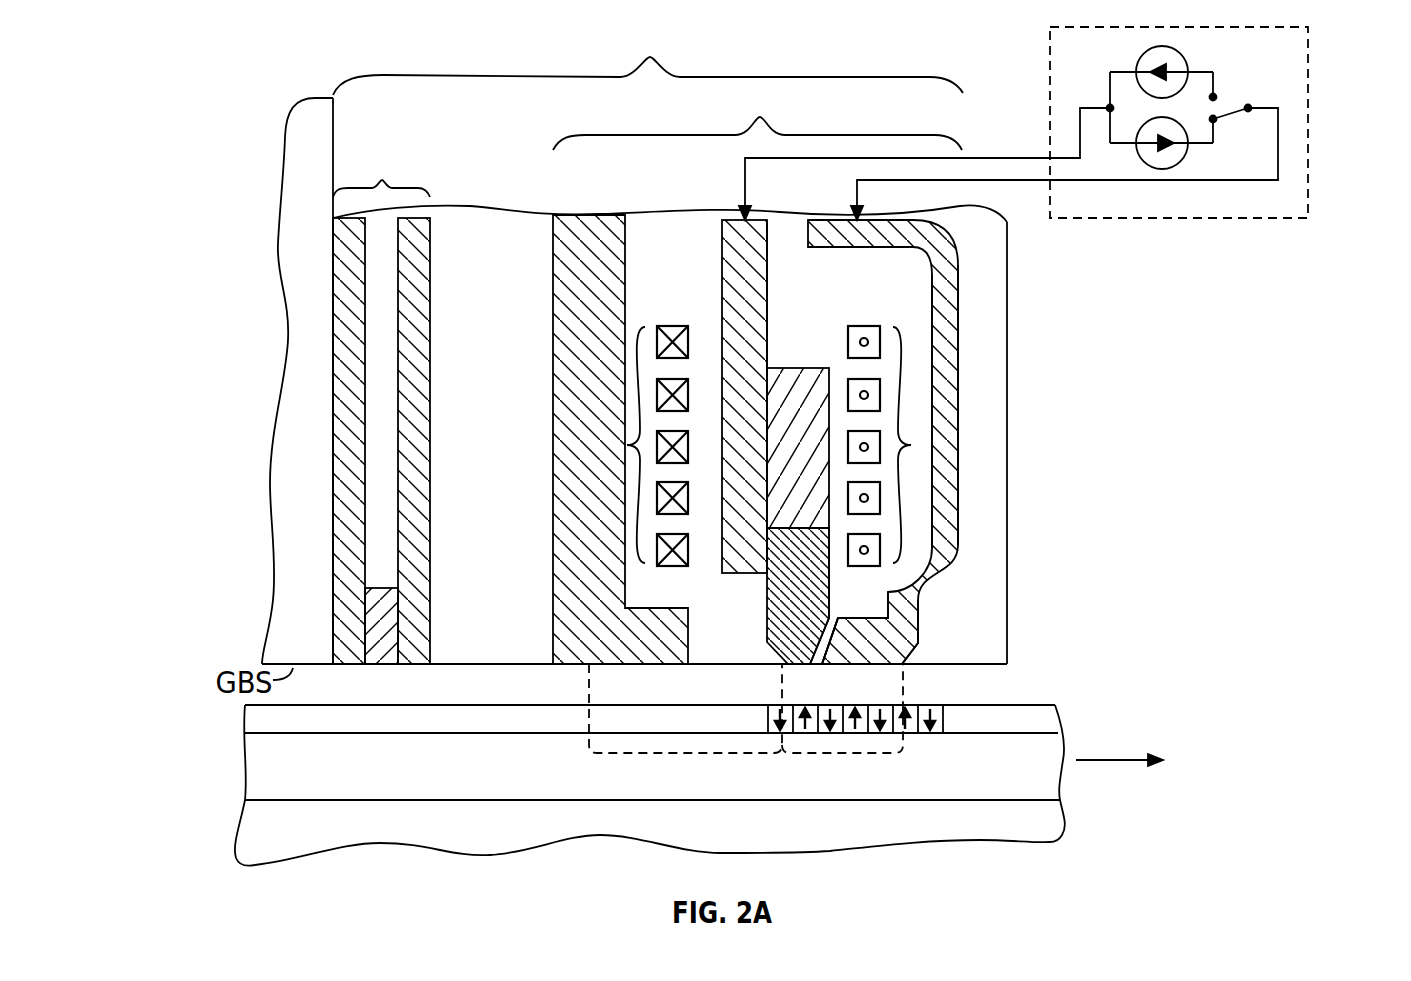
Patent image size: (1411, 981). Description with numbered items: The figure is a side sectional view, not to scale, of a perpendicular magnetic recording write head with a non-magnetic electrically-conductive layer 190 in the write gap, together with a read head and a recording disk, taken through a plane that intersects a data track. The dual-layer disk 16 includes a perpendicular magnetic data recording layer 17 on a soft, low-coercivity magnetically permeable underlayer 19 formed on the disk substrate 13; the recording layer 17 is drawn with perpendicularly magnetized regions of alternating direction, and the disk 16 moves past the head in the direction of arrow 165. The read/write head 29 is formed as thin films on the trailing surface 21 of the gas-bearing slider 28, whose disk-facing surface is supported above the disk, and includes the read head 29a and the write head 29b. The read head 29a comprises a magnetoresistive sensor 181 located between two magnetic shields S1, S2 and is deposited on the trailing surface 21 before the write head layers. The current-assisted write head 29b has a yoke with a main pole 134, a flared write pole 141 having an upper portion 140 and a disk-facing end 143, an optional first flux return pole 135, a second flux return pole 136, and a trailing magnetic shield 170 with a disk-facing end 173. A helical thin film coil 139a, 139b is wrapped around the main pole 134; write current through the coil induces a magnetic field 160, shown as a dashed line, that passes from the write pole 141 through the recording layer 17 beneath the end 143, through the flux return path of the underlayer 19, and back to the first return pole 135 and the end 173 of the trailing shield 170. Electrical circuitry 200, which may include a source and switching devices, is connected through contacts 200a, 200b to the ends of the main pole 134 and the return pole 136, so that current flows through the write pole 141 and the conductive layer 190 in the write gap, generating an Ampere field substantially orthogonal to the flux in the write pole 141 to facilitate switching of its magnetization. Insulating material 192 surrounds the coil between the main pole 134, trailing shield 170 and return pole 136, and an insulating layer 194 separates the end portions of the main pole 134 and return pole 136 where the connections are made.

The disk substrate 13 is at (1058, 813).
The dual-layer disk 16 is at (633, 773).
The perpendicular magnetic data recording layer (RL) 17 is at (1045, 718).
The soft underlayer (SUL) 19 is at (1050, 750).
The trailing surface 21 is at (333, 130).
The slider 28 is at (283, 165).
The read/write head 29 is at (648, 56).
The read head 29a is at (381, 175).
The write head 29b is at (757, 114).
The main pole 134 is at (735, 290).
The first flux return pole 135 is at (565, 292).
The second flux return pole 136 is at (944, 482).
The write coil (first section) 139a is at (627, 445).
The write coil (second section) 139b is at (914, 446).
The upper portion of write pole 140 is at (773, 370).
The write pole 141 is at (770, 585).
The disk-facing end of write pole 143 is at (790, 668).
The magnetic field 160 is at (600, 756).
The direction of disk motion 165 is at (1125, 757).
The trailing magnetic shield 170 is at (877, 638).
The disk-facing end of trailing shield 173 is at (835, 667).
The magnetoresistive read element (sensor) 181 is at (382, 657).
The non-magnetic electrically-conductive layer 190 is at (840, 618).
The insulating material portion 192 is at (889, 298).
The electrically insulating material layer 194 is at (788, 228).
The electrical circuitry 200 is at (1308, 123).
The electrical contact 200a is at (745, 215).
The electrical contact 200b is at (857, 215).
The magnetic shield S1 is at (347, 503).
The magnetic shield S2 is at (423, 505).